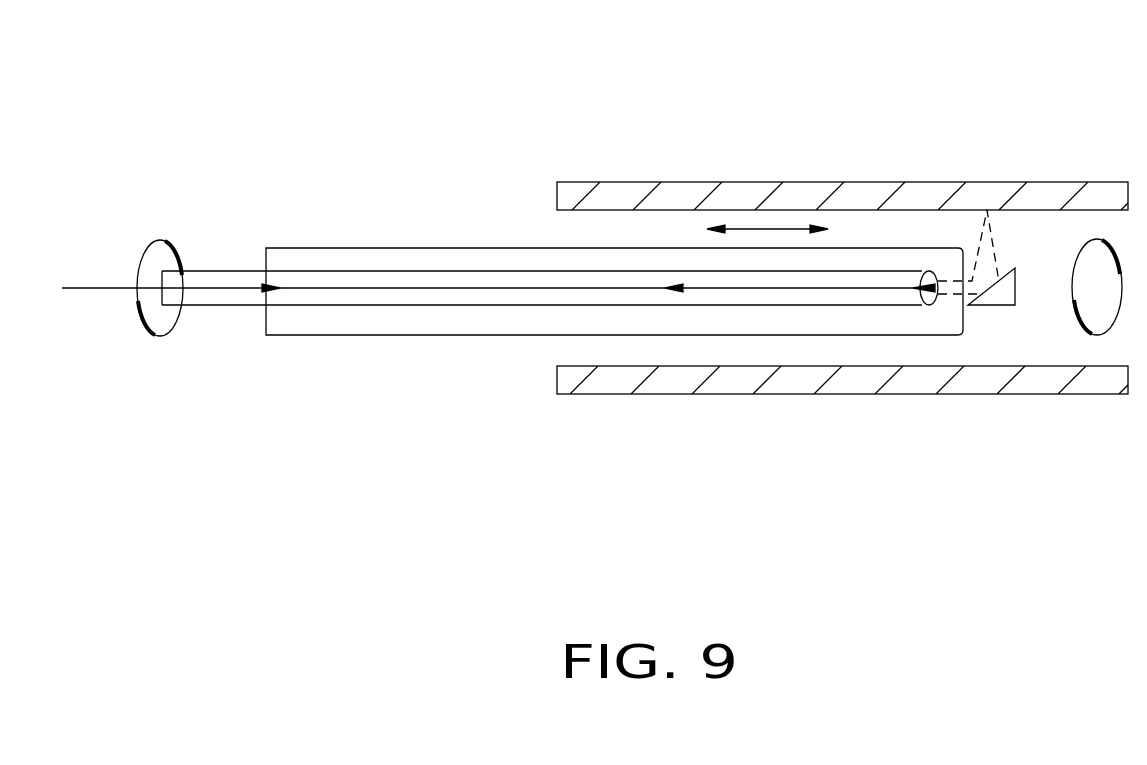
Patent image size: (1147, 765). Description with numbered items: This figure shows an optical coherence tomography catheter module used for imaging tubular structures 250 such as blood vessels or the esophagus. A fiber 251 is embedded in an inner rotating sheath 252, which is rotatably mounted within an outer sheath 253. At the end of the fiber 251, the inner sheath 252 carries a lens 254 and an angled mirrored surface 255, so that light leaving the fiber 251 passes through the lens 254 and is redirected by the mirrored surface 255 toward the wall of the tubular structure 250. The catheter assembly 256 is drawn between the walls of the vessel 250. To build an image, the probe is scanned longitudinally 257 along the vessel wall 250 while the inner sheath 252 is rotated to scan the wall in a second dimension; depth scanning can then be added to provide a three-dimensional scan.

The tubular structure 250 is at (638, 182).
The fiber 251 is at (88, 290).
The inner rotating sheath 252 is at (220, 306).
The outer sheath 253 is at (340, 247).
The lens 254 is at (923, 307).
The angled mirrored surface 255 is at (1000, 307).
The probe assembly 256 is at (472, 212).
The longitudinal scanning direction 257 is at (770, 229).